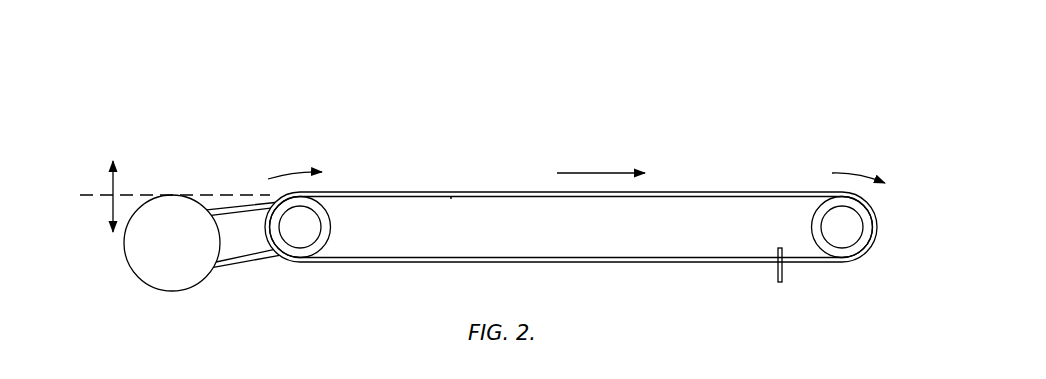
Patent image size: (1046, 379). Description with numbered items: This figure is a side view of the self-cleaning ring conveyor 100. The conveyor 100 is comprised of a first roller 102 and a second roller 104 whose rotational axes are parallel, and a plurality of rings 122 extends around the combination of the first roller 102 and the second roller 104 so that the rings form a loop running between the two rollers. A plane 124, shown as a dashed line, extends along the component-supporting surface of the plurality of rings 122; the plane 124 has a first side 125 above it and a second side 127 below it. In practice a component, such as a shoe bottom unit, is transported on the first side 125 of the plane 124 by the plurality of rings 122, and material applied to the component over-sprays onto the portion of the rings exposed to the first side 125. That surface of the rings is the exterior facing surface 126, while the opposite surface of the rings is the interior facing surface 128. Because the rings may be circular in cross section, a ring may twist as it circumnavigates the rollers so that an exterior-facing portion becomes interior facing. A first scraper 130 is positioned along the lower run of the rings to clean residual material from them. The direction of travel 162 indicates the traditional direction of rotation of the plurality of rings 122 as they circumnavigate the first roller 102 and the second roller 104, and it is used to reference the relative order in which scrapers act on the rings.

The self-cleaning ring conveyor 100 is at (253, 91).
The first roller 102 is at (307, 234).
The second roller 104 is at (847, 231).
The plurality of rings 122 is at (571, 209).
The plane 124 is at (80, 194).
The first side 125 is at (113, 180).
The exterior facing surface 126 is at (441, 191).
The second side 127 is at (113, 212).
The interior facing surface 128 is at (449, 201).
The first scraper 130 is at (775, 278).
The direction of travel 162 is at (600, 172).